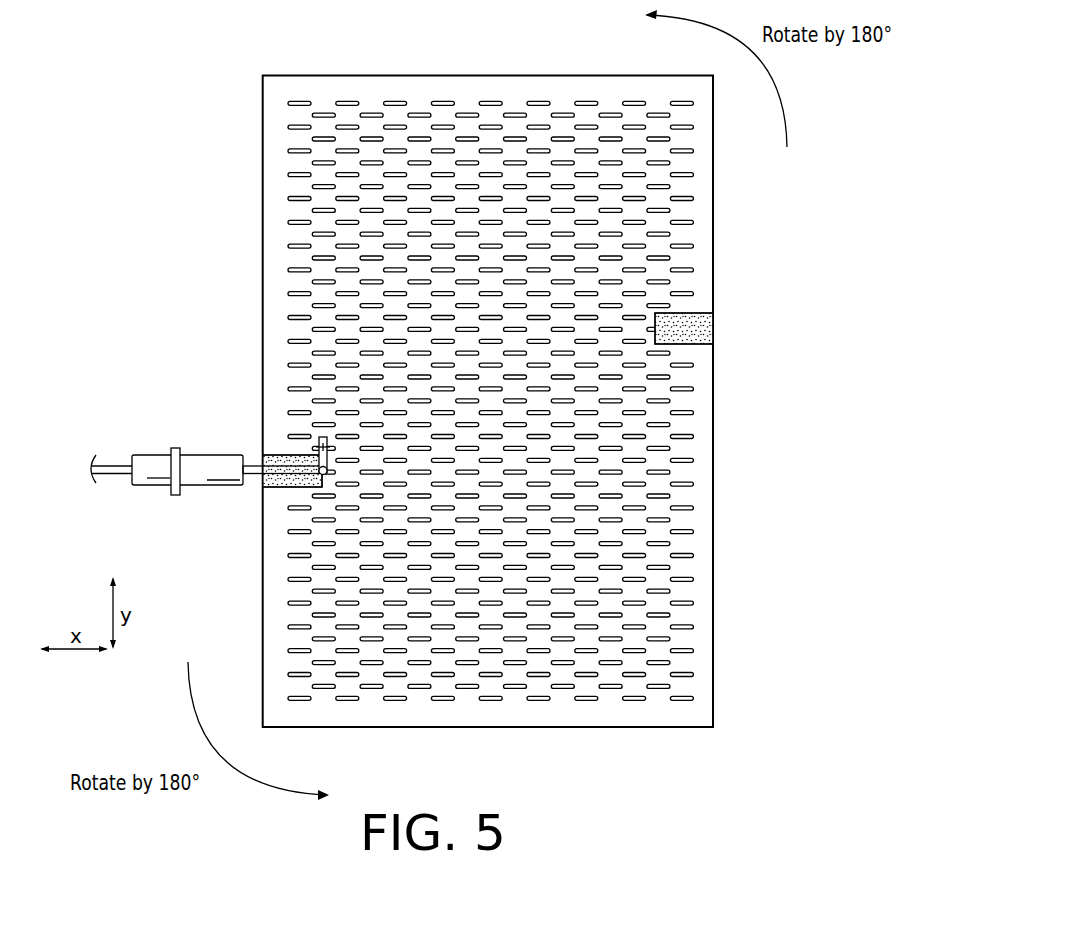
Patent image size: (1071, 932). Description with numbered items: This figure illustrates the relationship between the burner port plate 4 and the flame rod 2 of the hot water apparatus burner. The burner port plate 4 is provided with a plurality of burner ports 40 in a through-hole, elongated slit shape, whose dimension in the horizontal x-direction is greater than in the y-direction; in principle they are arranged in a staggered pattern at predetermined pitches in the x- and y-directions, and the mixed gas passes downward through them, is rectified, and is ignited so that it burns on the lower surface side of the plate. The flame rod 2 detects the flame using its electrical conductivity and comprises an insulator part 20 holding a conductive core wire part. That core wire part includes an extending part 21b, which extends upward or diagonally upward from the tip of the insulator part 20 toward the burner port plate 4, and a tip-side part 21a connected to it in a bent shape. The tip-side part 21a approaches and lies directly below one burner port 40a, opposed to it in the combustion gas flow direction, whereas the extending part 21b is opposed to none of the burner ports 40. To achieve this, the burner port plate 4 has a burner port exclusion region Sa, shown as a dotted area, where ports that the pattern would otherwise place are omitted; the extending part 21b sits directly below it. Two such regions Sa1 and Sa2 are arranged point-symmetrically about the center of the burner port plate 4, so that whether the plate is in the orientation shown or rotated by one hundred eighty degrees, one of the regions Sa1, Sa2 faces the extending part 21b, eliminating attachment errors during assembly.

The flame rod 2 is at (210, 415).
The insulator part 20 is at (198, 463).
The tip-side part 21a is at (320, 453).
The extending part 21b is at (265, 453).
The burner port plate 4 is at (415, 88).
The burner ports 40 is at (515, 115).
The burner port 40a is at (325, 438).
The burner port exclusion region Sa is at (481, 451).
The first burner port exclusion region Sa1 is at (283, 480).
The second burner port exclusion region Sa2 is at (695, 328).